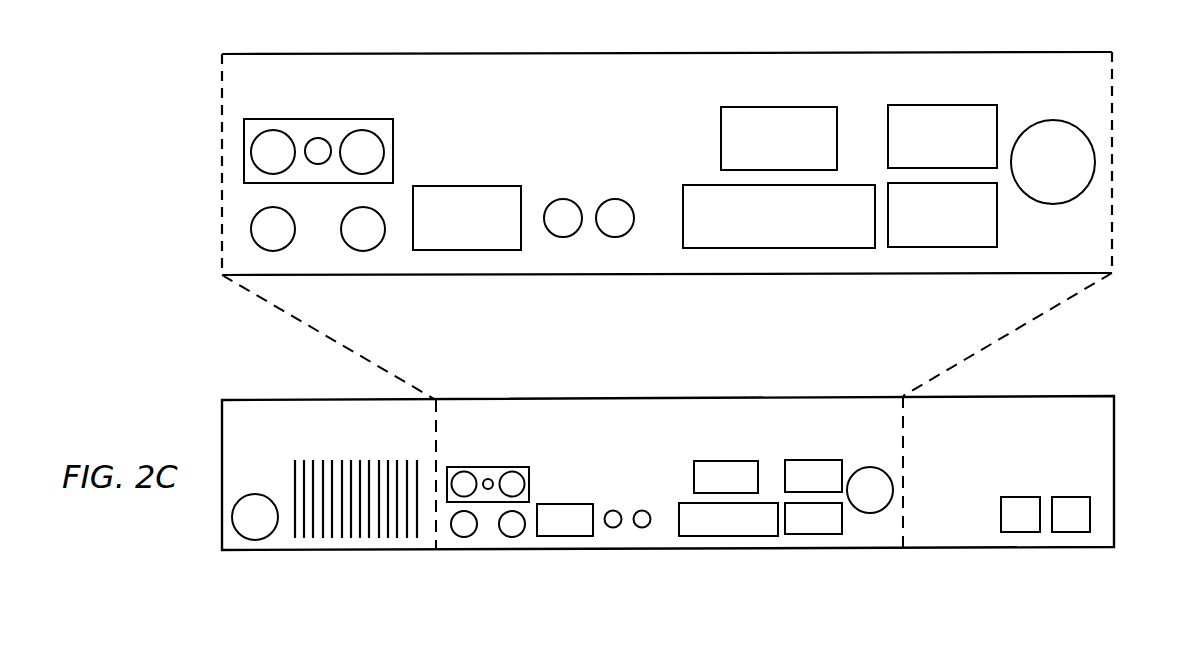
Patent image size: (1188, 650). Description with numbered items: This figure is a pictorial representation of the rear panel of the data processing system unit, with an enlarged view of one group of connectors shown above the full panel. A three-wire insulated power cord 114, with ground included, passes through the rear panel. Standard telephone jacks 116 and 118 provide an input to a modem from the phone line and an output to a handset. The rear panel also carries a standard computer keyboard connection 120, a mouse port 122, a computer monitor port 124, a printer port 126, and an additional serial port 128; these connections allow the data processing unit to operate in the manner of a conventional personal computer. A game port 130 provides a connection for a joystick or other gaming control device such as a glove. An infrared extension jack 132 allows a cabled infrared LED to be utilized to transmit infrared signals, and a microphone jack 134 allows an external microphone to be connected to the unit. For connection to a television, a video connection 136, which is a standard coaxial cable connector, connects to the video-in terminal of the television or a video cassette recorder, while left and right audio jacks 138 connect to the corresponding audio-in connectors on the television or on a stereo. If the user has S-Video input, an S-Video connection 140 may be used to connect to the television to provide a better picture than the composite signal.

The power cord 114 is at (258, 494).
The telephone jack 116 is at (1020, 497).
The telephone jack 118 is at (1071, 497).
The computer keyboard connection 120 is at (1052, 120).
The mouse port 122 is at (940, 105).
The computer monitor port 124 is at (779, 107).
The printer port 126 is at (697, 185).
The serial port 128 is at (997, 230).
The game port 130 is at (467, 186).
The infrared extension jack 132 is at (562, 199).
The microphone jack 134 is at (615, 199).
The video connection 136 is at (362, 130).
The left and right audio jacks 138 is at (273, 130).
The S-Video connection 140 is at (348, 245).